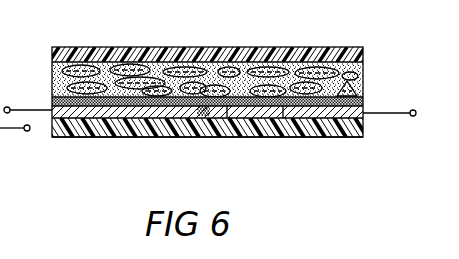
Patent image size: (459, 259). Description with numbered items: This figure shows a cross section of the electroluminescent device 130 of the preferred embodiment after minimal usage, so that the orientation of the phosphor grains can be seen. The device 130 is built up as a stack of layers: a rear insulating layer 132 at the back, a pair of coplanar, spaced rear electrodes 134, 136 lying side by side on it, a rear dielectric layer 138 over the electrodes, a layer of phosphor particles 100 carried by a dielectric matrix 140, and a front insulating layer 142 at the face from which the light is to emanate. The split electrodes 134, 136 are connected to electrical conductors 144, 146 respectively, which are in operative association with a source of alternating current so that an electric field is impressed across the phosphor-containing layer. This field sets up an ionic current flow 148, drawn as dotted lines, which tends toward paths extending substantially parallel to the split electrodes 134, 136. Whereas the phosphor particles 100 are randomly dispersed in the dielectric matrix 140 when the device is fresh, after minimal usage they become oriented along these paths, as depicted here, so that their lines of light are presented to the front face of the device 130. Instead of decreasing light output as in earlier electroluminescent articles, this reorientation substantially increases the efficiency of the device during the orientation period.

The electroluminescent device 130 is at (102, 162).
The front insulating layer 142 is at (148, 57).
The dielectric matrix 140 is at (62, 67).
The phosphor particles 100 is at (83, 86).
The ionic current flow 148 is at (217, 83).
The electrical conductor 144 is at (29, 111).
The rear electrode 136 is at (227, 107).
The rear dielectric layer 138 is at (283, 107).
The rear electrode 134 is at (167, 117).
The rear insulating layer 132 is at (188, 138).
The electrical conductor 146 is at (0, 138).